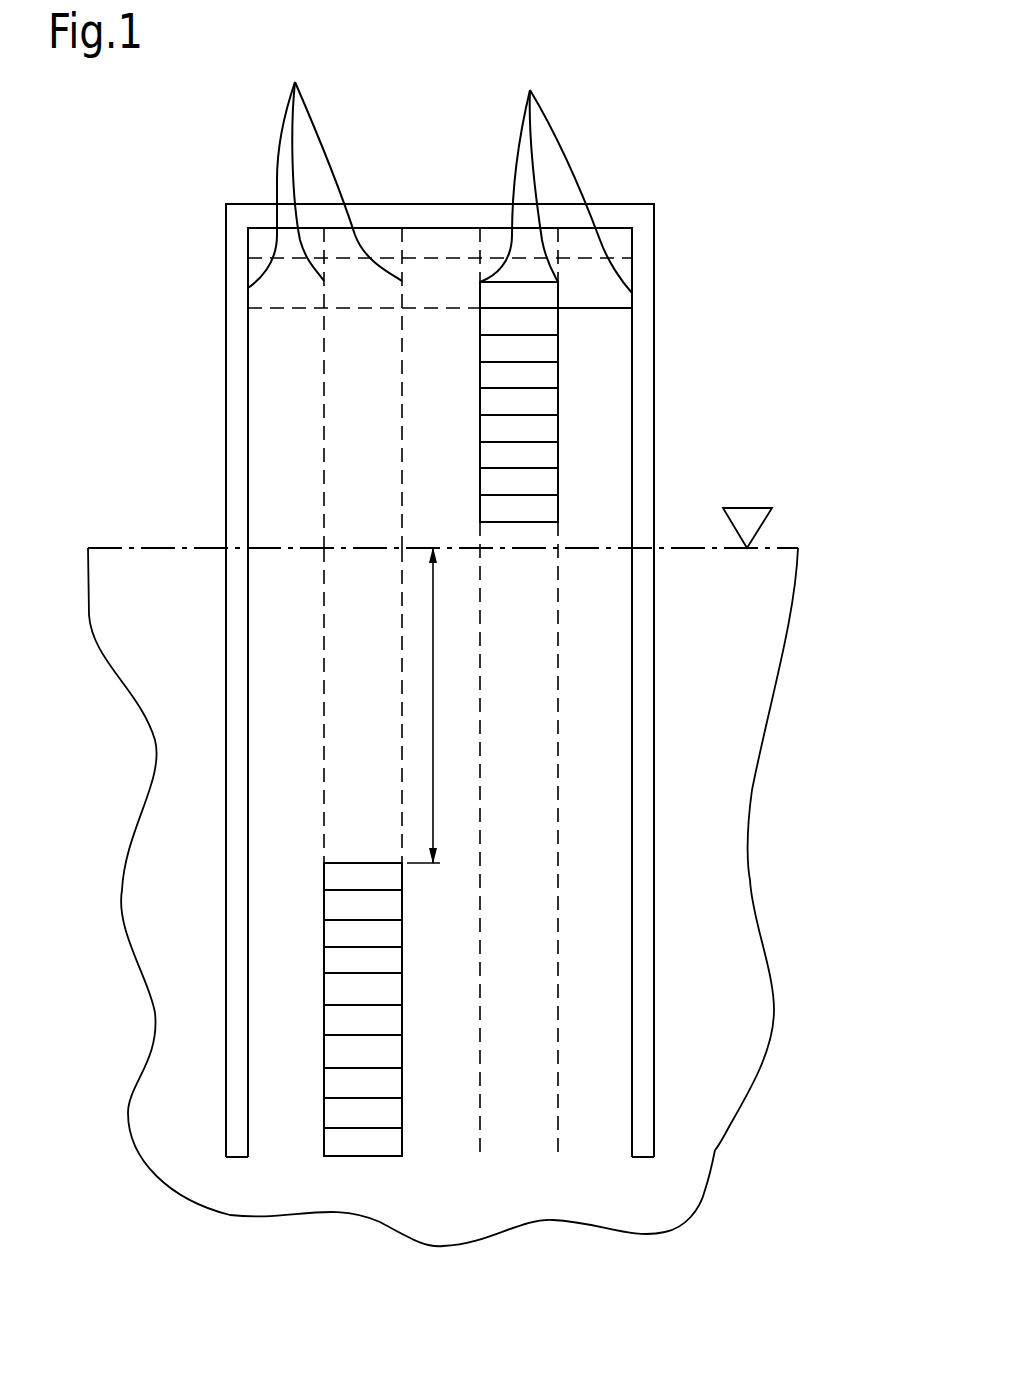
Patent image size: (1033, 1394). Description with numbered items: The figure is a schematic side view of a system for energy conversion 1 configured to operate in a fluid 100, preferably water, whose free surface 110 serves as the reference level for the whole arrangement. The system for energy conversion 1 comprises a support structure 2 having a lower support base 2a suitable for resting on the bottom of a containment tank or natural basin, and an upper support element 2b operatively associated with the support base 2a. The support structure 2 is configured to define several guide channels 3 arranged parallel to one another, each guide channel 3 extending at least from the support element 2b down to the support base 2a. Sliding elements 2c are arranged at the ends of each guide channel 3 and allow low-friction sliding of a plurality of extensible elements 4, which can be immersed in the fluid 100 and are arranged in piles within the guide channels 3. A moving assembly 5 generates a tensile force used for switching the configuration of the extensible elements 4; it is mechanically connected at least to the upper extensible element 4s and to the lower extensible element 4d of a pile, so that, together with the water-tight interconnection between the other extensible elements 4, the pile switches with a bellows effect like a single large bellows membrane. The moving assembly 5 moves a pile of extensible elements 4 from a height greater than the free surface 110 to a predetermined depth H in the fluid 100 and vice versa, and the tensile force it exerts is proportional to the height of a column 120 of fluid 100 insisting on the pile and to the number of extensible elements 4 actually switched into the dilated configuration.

The system for energy conversion 1 is at (708, 183).
The support structure 2 is at (222, 250).
The support base 2a is at (238, 1170).
The support element 2b is at (428, 204).
The sliding elements 2c is at (440, 172).
The guide channel 3 is at (443, 418).
The extensible elements 4 is at (560, 430).
The upper extensible element 4s is at (362, 863).
The lower extensible element 4d is at (370, 1159).
The moving assembly 5 is at (683, 333).
The fluid 100 is at (748, 627).
The free surface 110 is at (747, 513).
The column 120 is at (362, 615).
The depth H is at (433, 713).